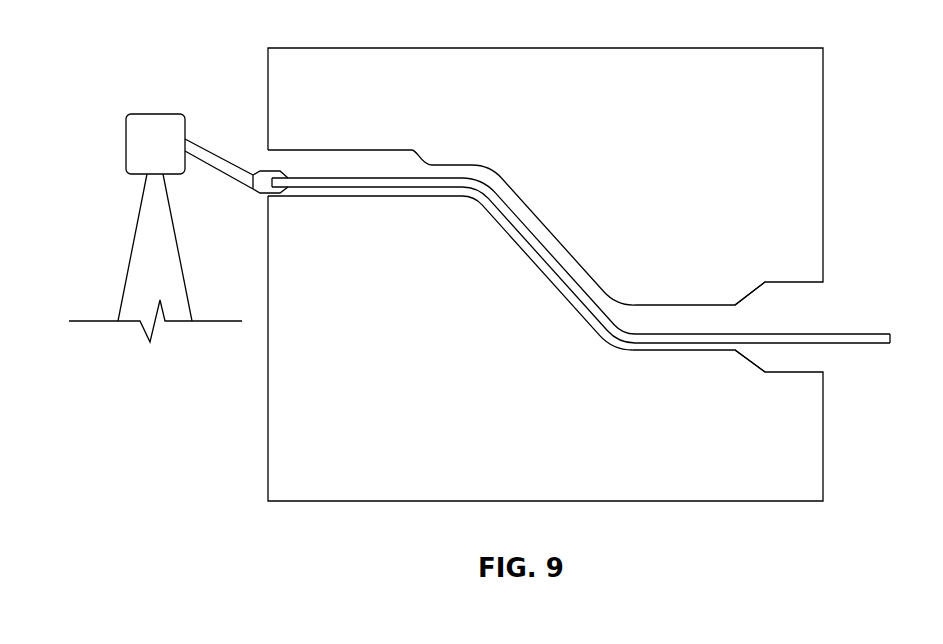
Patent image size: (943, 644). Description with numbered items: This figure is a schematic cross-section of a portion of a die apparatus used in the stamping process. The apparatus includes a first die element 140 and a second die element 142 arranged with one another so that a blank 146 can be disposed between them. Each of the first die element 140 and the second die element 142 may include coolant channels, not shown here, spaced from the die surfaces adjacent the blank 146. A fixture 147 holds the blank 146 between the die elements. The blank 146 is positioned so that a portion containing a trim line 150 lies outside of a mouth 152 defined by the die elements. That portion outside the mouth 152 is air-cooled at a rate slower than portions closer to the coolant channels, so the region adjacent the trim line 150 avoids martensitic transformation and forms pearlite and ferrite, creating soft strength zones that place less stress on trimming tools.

The first die element 140 is at (793, 501).
The second die element 142 is at (825, 75).
The blank 146 is at (272, 173).
The fixture 147 is at (158, 113).
The trim line 150 is at (867, 343).
The mouth 152 is at (785, 271).